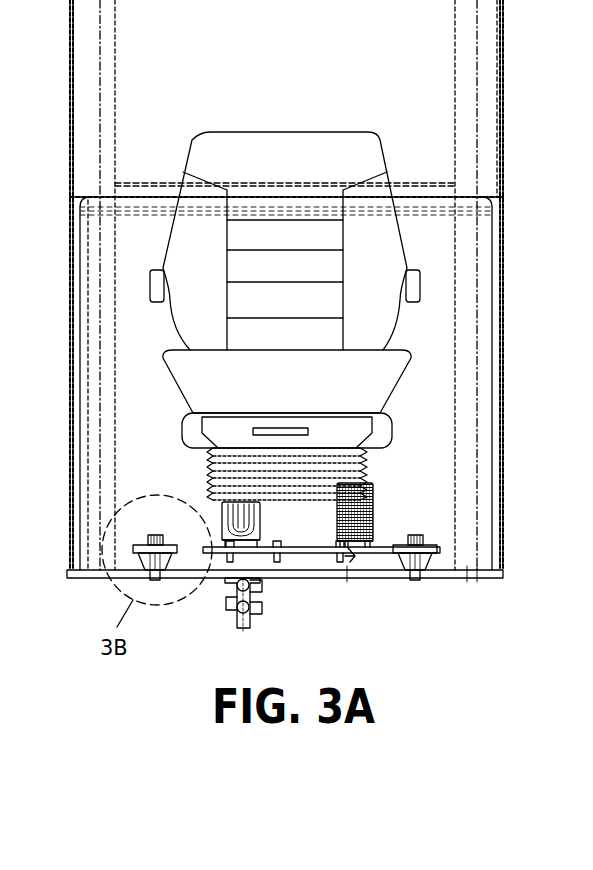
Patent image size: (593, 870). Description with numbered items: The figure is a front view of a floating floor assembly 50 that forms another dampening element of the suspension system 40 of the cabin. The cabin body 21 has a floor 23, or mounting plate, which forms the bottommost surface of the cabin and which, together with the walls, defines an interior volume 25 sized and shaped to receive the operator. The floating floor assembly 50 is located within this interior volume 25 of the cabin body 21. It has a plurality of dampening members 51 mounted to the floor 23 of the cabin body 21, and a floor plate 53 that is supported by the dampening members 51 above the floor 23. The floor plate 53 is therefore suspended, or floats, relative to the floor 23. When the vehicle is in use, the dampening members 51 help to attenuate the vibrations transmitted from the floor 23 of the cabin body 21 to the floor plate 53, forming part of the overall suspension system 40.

The cabin body 21 is at (503, 268).
The floor 23 is at (385, 578).
The interior volume 25 is at (437, 410).
The suspension system 40 is at (140, 525).
The floating floor assembly 50 is at (390, 530).
The dampening members 51 is at (425, 561).
The floor plate 53 is at (310, 553).